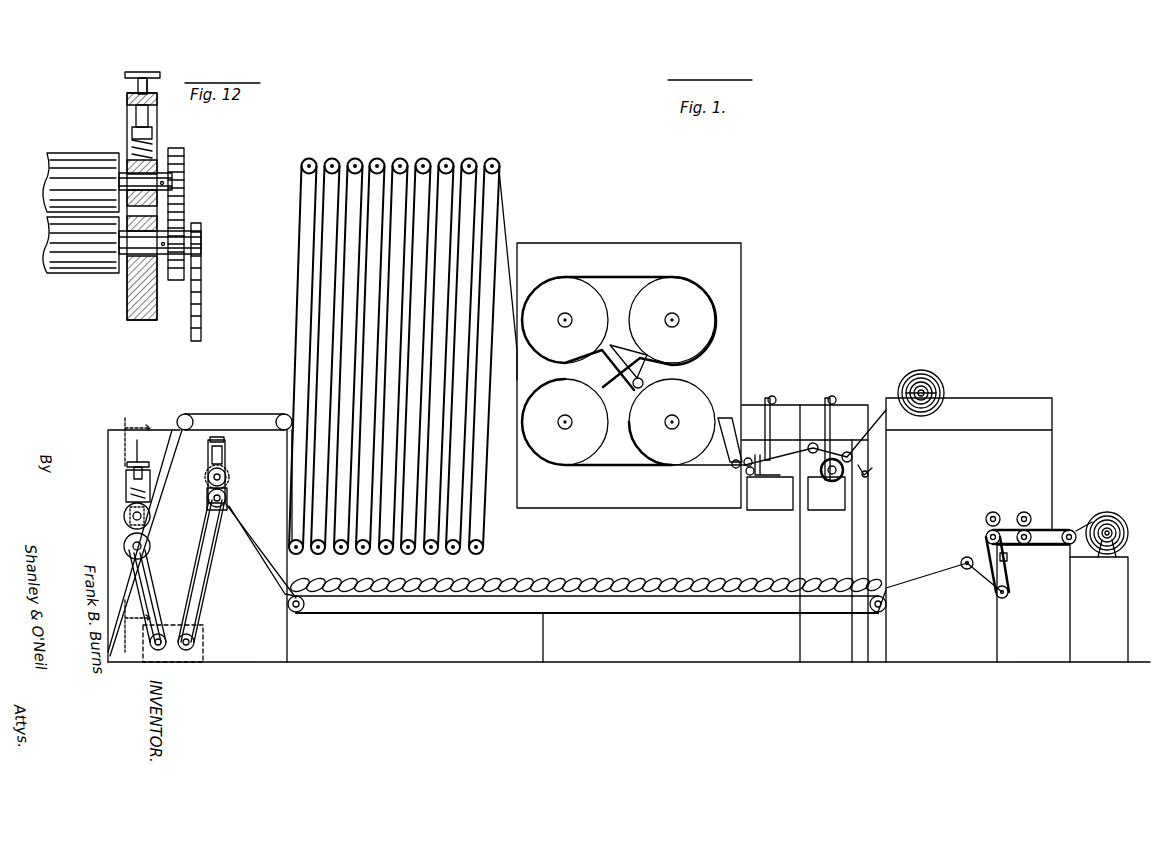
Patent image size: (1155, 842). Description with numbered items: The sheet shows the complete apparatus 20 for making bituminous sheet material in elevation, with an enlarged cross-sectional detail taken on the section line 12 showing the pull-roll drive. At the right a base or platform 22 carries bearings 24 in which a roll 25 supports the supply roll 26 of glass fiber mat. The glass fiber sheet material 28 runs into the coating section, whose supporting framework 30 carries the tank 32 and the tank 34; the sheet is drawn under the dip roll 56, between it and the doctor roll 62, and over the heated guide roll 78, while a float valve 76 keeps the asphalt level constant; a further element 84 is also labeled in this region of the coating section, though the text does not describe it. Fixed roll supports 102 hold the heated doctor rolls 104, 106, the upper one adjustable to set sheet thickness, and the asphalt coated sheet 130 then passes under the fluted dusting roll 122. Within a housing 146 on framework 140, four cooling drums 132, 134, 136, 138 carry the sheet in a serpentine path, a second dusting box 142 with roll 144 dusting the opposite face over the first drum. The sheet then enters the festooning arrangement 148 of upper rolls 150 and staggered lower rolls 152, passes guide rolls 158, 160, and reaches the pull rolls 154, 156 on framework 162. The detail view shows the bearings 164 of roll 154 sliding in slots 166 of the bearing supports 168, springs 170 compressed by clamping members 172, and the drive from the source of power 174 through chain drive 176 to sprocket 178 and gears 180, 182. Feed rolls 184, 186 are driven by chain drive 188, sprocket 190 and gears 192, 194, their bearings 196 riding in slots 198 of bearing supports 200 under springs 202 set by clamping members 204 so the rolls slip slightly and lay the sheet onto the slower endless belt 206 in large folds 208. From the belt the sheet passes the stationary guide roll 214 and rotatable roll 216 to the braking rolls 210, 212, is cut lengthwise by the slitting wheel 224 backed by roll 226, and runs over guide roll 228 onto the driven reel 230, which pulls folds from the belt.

In FIG. 1, the section line 12 is at (132, 536).
In FIG. 1, the apparatus 20 is at (824, 290).
In FIG. 1, the base or platform 22 is at (1015, 405).
In FIG. 1, the bearings 24 is at (720, 418).
In FIG. 1, the roll 25 is at (940, 382).
In FIG. 1, the supply roll 26 is at (928, 372).
In FIG. 1, the glass fiber sheet material 28 is at (886, 420).
In FIG. 1, the supporting framework 30 is at (792, 405).
In FIG. 1, the tank 32 is at (848, 507).
In FIG. 1, the tank 34 is at (768, 507).
In FIG. 1, the dip roll 56 is at (830, 482).
In FIG. 1, the doctor roll 62 is at (852, 455).
In FIG. 1, the float valve 76 is at (870, 476).
In FIG. 1, the guide roll 78 is at (813, 445).
In FIG. 1, the guide roller 84 is at (748, 405).
In FIG. 1, the roll supports 102 is at (752, 420).
In FIG. 1, the doctor roll 104 is at (745, 468).
In FIG. 1, the doctor roll 106 is at (746, 478).
In FIG. 1, the roll 122 is at (702, 466).
In FIG. 1, the asphalt coated sheet 130 is at (508, 193).
In FIG. 1, the cooling drum 132 is at (636, 438).
In FIG. 1, the cooling drum 134 is at (684, 290).
In FIG. 1, the cooling drum 136 is at (555, 290).
In FIG. 1, the cooling drum 138 is at (558, 450).
In FIG. 1, the framework 140 is at (670, 258).
In FIG. 1, the second dusting box 142 is at (628, 350).
In FIG. 1, the roll 144 is at (632, 386).
In FIG. 1, the housing 146 is at (665, 243).
In FIG. 1, the festooning arrangement 148 is at (406, 152).
In FIG. 1, the upper rolls 150 is at (475, 160).
In FIG. 1, the lower rolls 152 is at (343, 554).
In FIG. 12, the pull roll 154 is at (80, 157).
In FIG. 1, the pull roll 154 is at (160, 530).
In FIG. 12, the pull roll 156 is at (98, 272).
In FIG. 1, the pull roll 156 is at (146, 548).
In FIG. 1, the guide roll 158 is at (282, 414).
In FIG. 1, the guide roll 160 is at (188, 414).
In FIG. 1, the framework 162 is at (122, 422).
In FIG. 12, the bearings 164 is at (184, 160).
In FIG. 1, the bearings 164 is at (172, 492).
In FIG. 12, the slots 166 is at (148, 116).
In FIG. 1, the slots 166 is at (128, 480).
In FIG. 12, the bearing supports 168 is at (141, 72).
In FIG. 1, the bearing supports 168 is at (128, 466).
In FIG. 12, the springs 170 is at (152, 150).
In FIG. 1, the springs 170 is at (130, 492).
In FIG. 12, the clamping members 172 is at (125, 76).
In FIG. 1, the clamping members 172 is at (137, 440).
In FIG. 1, the source of power 174 is at (186, 652).
In FIG. 12, the chain drive 176 is at (201, 280).
In FIG. 1, the chain drive 176 is at (150, 590).
In FIG. 12, the sprocket 178 is at (185, 236).
In FIG. 1, the sprocket 178 is at (133, 580).
In FIG. 12, the gear 180 is at (178, 228).
In FIG. 1, the gear 180 is at (119, 548).
In FIG. 12, the gear 182 is at (178, 176).
In FIG. 1, the gear 182 is at (119, 518).
In FIG. 1, the roll 184 is at (225, 462).
In FIG. 1, the roll 186 is at (228, 496).
In FIG. 1, the chain drive 188 is at (232, 516).
In FIG. 1, the sprocket 190 is at (220, 520).
In FIG. 1, the gear 192 is at (200, 490).
In FIG. 1, the gear 194 is at (226, 472).
In FIG. 1, the bearings 196 is at (228, 480).
In FIG. 1, the slots 198 is at (236, 419).
In FIG. 1, the bearing supports 200 is at (201, 468).
In FIG. 1, the springs 202 is at (245, 439).
In FIG. 1, the clamping members 204 is at (212, 407).
In FIG. 1, the endless belt 206 is at (490, 615).
In FIG. 1, the folds 208 is at (428, 580).
In FIG. 1, the braking roll 210 is at (986, 538).
In FIG. 1, the braking roll 212 is at (986, 519).
In FIG. 1, the stationary guide roll 214 is at (967, 570).
In FIG. 1, the rotatable roll 216 is at (1004, 600).
In FIG. 1, the slitting wheel 224 is at (1030, 546).
In FIG. 1, the roll 226 is at (1024, 512).
In FIG. 1, the guide roll 228 is at (1088, 562).
In FIG. 1, the reel 230 is at (1108, 512).